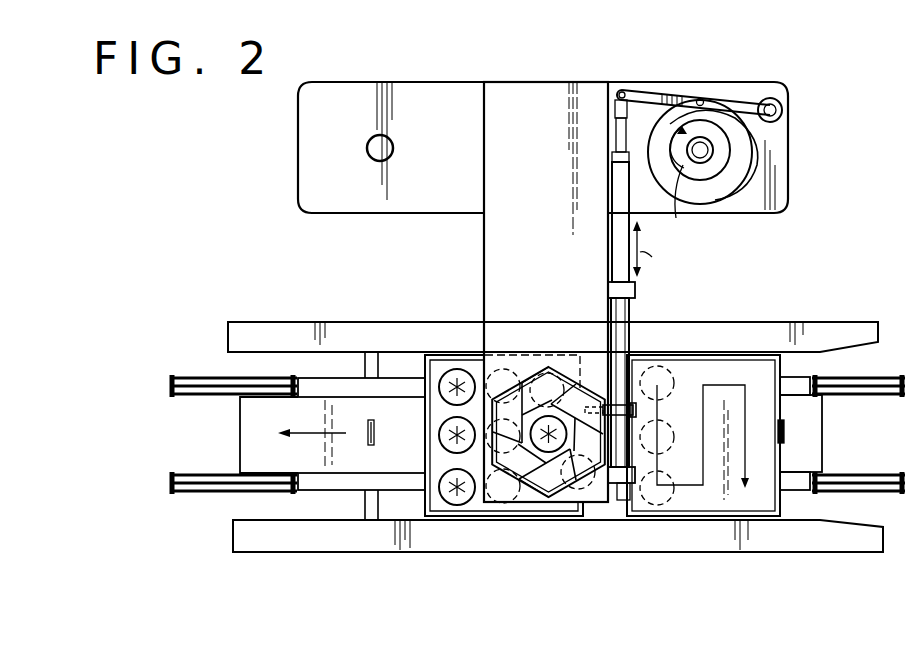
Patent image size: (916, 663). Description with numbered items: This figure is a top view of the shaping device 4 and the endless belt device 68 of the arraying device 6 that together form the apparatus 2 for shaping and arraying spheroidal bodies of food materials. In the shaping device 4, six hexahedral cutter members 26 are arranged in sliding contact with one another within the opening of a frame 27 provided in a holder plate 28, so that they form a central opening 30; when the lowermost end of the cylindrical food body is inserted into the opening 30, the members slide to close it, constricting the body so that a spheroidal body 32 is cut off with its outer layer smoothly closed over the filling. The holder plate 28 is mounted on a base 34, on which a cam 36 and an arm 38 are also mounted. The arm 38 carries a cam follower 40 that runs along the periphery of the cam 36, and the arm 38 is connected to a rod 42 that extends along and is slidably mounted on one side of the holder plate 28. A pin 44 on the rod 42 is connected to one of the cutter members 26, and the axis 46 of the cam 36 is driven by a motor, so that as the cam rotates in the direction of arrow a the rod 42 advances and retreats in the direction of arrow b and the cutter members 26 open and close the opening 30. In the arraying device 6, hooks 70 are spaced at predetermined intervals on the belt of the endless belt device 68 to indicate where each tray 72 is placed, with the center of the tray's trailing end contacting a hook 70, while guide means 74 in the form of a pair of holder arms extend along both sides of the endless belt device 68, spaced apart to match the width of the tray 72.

The apparatus 2 is at (821, 77).
The shaping device 4 is at (578, 70).
The arraying device 6 is at (331, 296).
The hexahedral cutter members 26 is at (557, 478).
The frame 27 is at (528, 478).
The holder plate 28 is at (603, 490).
The central opening 30 is at (590, 470).
The spheroidal body 32 is at (447, 502).
The base 34 is at (780, 150).
The cam 36 is at (755, 172).
The arm 38 is at (650, 90).
The cam follower 40 is at (700, 97).
The rod 42 is at (632, 308).
The pin 44 is at (636, 410).
The axis 46 is at (705, 160).
The endless belt device 68 is at (250, 433).
The hooks 70 is at (784, 432).
The tray 72 is at (780, 503).
The guide means 74 is at (232, 340).